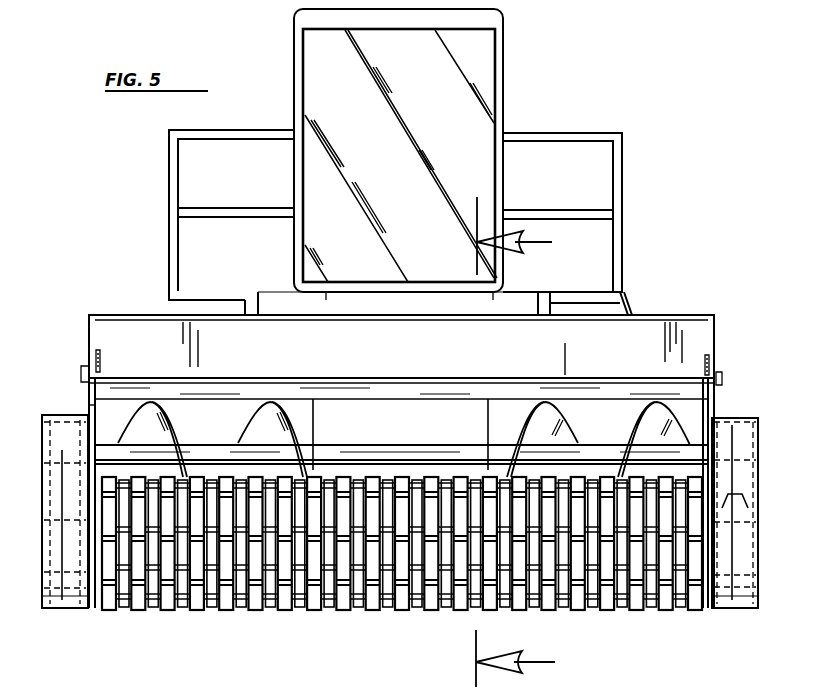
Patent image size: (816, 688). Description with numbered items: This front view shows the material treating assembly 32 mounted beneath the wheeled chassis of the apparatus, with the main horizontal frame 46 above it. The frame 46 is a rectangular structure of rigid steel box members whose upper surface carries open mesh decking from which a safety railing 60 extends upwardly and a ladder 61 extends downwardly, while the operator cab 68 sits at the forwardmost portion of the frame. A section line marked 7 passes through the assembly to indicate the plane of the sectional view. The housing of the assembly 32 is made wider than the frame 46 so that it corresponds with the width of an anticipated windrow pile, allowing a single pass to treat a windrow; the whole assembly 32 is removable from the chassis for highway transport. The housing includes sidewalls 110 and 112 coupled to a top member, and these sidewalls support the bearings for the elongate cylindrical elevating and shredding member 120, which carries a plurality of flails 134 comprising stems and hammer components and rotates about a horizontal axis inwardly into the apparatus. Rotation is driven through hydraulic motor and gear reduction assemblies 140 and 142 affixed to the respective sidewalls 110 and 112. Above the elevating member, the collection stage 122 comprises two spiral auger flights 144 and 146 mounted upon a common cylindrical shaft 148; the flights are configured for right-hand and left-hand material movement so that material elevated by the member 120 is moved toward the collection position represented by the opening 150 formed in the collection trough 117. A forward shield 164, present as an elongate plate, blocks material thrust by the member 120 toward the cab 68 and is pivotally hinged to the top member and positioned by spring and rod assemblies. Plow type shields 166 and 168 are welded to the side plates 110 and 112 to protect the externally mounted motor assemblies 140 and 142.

The section line 7- 7 is at (516, 442).
The material treating assembly 32 is at (702, 273).
The main horizontal frame 46 is at (523, 292).
The safety railing 60 is at (169, 172).
The ladder 61 is at (632, 310).
The operator cab 68 is at (504, 38).
The sidewall 110 is at (708, 413).
The sidewall 112 is at (90, 407).
The collection trough 117 is at (476, 410).
The elevating and shredding member 120 is at (402, 564).
The collection stage 122 is at (108, 436).
The flails 134 is at (373, 600).
The hydraulic motor and gear reduction assembly 140 is at (742, 493).
The hydraulic motor and gear reduction assembly 142 is at (63, 482).
The auger flight 144 is at (640, 408).
The auger flight 146 is at (253, 405).
The cylindrical shaft 148 is at (697, 453).
The opening 150 is at (383, 433).
The forward shield 164 is at (133, 330).
The plow type shield 166 is at (745, 590).
The plow type shield 168 is at (63, 593).